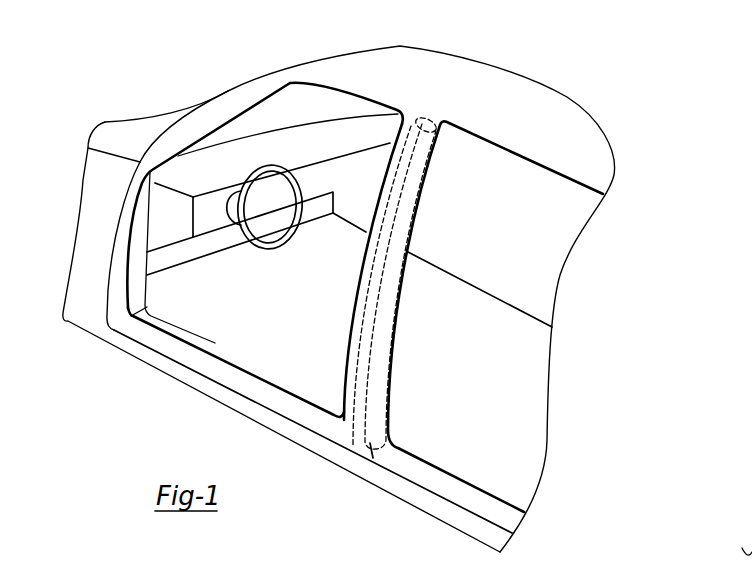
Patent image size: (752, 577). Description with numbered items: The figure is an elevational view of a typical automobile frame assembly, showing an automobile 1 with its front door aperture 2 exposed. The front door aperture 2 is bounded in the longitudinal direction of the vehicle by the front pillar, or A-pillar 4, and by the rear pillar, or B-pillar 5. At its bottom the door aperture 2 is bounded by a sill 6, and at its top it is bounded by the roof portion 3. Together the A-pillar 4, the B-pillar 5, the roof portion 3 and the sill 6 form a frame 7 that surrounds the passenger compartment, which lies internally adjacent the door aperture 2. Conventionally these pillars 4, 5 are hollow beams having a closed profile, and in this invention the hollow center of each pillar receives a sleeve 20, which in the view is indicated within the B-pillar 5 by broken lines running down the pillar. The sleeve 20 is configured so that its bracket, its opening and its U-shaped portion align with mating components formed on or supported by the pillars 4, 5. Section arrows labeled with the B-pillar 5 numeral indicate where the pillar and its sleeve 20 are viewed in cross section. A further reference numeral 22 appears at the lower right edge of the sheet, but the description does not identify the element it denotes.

The automobile 1 is at (126, 110).
The front door aperture 2 is at (200, 327).
The roof portion 3 is at (532, 100).
The A-pillar 4 is at (230, 90).
The B-pillar 5 is at (335, 233).
The sill 6 is at (265, 428).
The frame 7 is at (346, 84).
The sleeve 20 is at (372, 440).
The rear body structure 22 is at (741, 540).